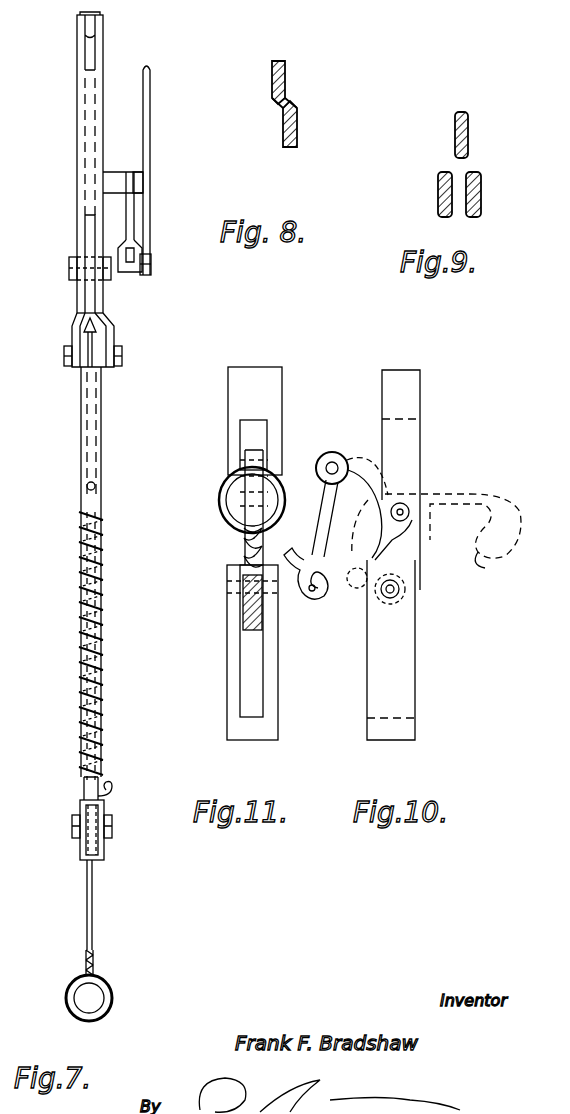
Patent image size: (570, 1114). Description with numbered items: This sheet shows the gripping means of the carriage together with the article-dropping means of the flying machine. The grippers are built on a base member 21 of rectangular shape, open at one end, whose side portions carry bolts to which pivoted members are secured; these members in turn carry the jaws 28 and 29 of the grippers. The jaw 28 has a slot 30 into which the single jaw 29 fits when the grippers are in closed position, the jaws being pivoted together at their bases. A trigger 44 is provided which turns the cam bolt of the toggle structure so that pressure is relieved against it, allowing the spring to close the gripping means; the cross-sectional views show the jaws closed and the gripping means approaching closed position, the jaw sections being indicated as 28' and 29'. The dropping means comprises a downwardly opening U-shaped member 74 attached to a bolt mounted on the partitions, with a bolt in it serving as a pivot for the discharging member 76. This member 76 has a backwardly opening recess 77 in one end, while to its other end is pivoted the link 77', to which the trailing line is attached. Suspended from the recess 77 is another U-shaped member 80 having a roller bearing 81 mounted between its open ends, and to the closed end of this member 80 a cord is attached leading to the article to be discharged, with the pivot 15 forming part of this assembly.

In FIG. 7, the jaw 28 is at (112, 189).
In FIG. 9, the jaw 28 is at (435, 195).
In FIG. 7, the slot 30 is at (88, 236).
In FIG. 7, the trigger 44 is at (148, 118).
In FIG. 7, the base member 21 is at (98, 846).
In FIG. 8, the offset plate section 29' is at (307, 80).
In FIG. 8, the offset plate section 28' is at (312, 124).
In FIG. 9, the jaw 29 is at (438, 135).
In FIG. 11, the U-shaped member 74 is at (262, 415).
In FIG. 10, the U-shaped member 74 is at (405, 460).
In FIG. 11, the roller bearing 81 is at (250, 605).
In FIG. 10, the roller bearing 81 is at (398, 600).
In FIG. 10, the pivot pin 15 is at (404, 508).
In FIG. 10, the discharging member 76 is at (495, 516).
In FIG. 10, the recess 77 is at (496, 573).
In FIG. 10, the link 77' is at (316, 551).
In FIG. 10, the U-shaped member 80 is at (395, 690).